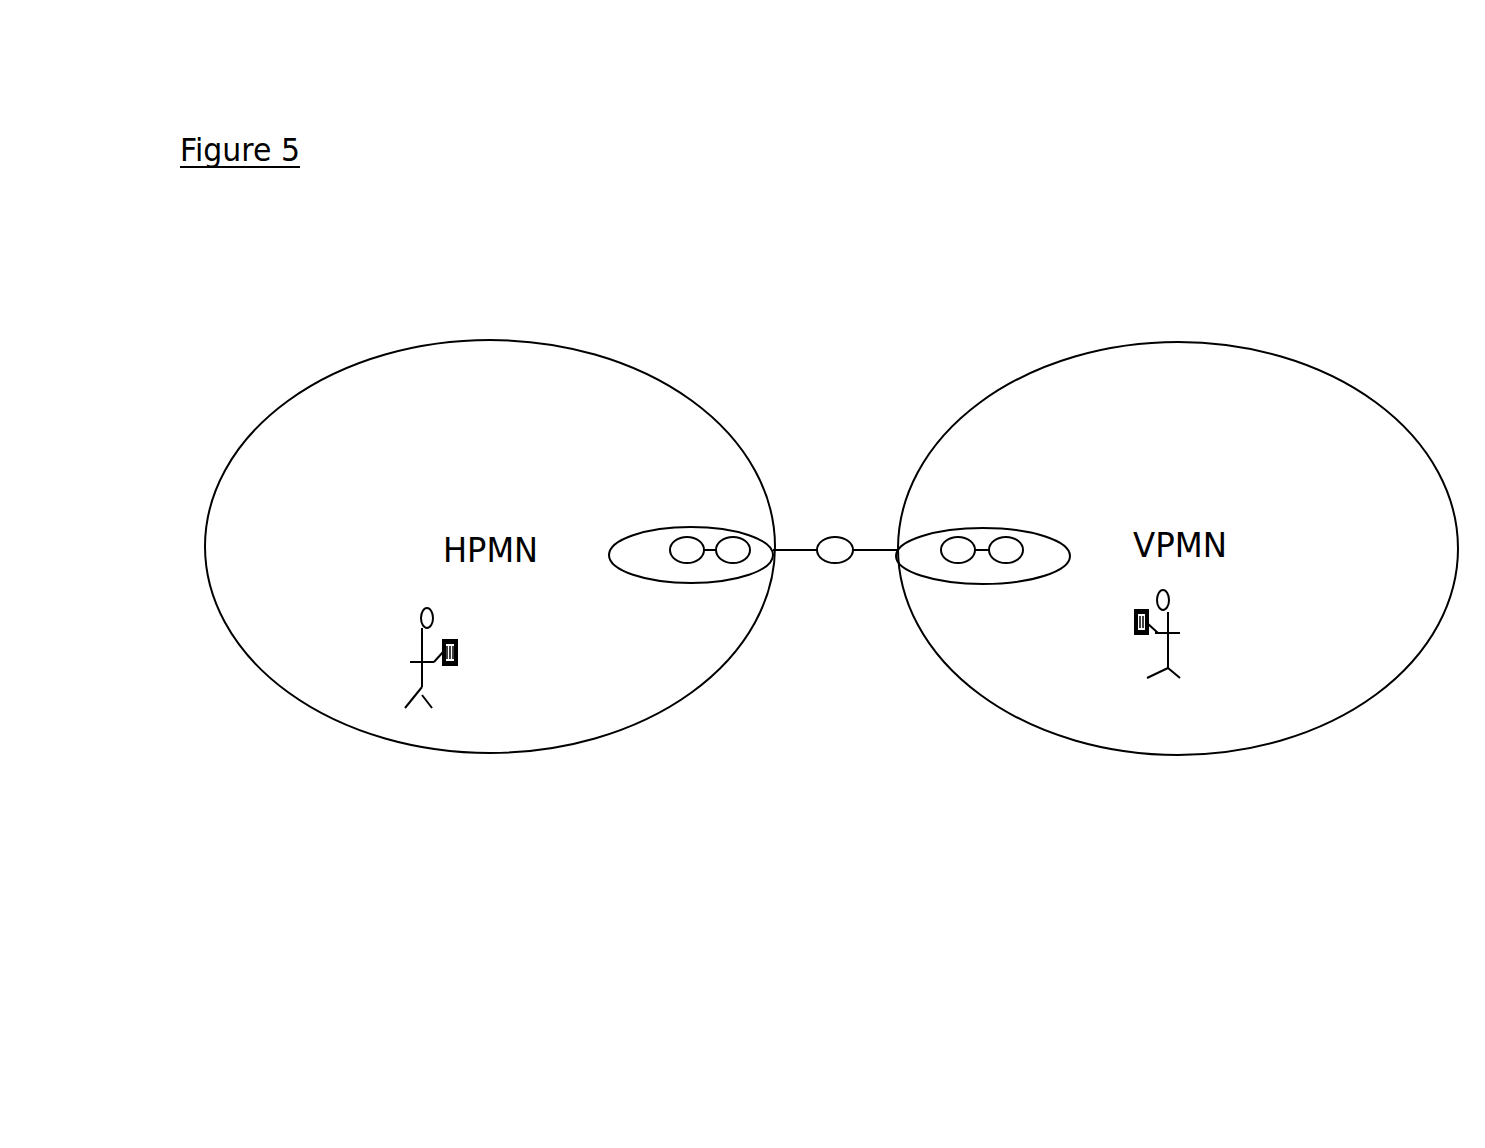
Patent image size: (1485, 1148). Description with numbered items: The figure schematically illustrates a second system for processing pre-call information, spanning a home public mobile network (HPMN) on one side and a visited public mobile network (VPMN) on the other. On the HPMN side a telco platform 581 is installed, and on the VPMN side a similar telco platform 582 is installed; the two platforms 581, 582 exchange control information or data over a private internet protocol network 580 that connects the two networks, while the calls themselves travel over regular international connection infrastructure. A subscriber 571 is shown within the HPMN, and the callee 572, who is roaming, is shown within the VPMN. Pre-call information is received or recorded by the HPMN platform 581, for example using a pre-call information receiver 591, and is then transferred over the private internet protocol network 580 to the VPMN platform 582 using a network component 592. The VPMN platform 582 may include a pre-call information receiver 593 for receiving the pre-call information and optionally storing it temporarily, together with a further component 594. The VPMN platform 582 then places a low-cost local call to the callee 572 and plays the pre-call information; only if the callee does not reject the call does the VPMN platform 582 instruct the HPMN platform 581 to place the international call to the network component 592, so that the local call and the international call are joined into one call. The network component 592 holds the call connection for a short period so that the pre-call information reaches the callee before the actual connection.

The home mobile subscriber with terminal 571 is at (410, 605).
The callee 572 is at (1192, 647).
The private internet protocol network 580 is at (846, 548).
The telco platform 581 is at (650, 548).
The telco platform 582 is at (930, 563).
The pre-call information receiver 591 is at (685, 558).
The network component 592 is at (737, 563).
The pre-call information receiver 593 is at (948, 540).
The VPMN network element 594 is at (1003, 540).